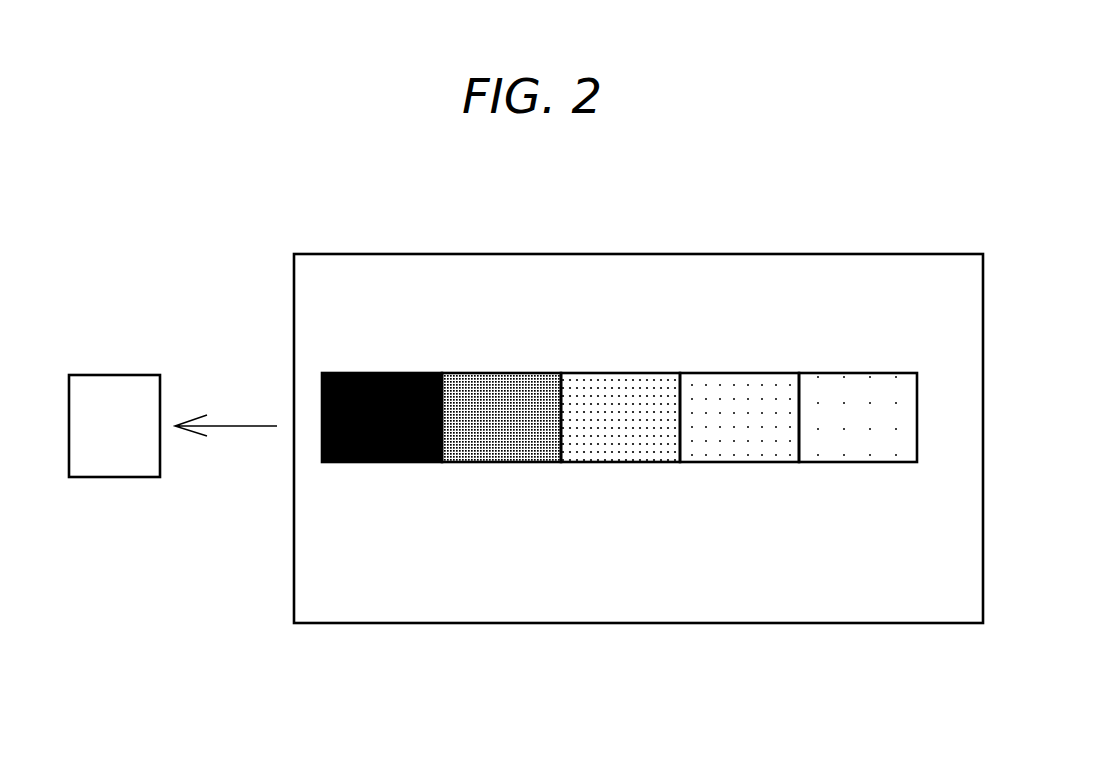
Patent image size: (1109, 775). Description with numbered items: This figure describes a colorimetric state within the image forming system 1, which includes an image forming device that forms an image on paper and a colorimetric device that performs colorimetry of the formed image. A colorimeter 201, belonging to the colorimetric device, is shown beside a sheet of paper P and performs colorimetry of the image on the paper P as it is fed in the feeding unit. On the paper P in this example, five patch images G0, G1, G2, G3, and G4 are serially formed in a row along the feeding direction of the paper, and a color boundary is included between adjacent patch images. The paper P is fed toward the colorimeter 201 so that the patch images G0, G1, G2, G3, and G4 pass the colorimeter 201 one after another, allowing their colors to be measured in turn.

The image forming system 1 is at (547, 174).
The colorimeter 201 is at (115, 375).
The paper P is at (775, 623).
The patch image G0 is at (383, 462).
The patch image G1 is at (500, 462).
The patch image G2 is at (620, 462).
The patch image G3 is at (740, 372).
The patch image G4 is at (858, 372).